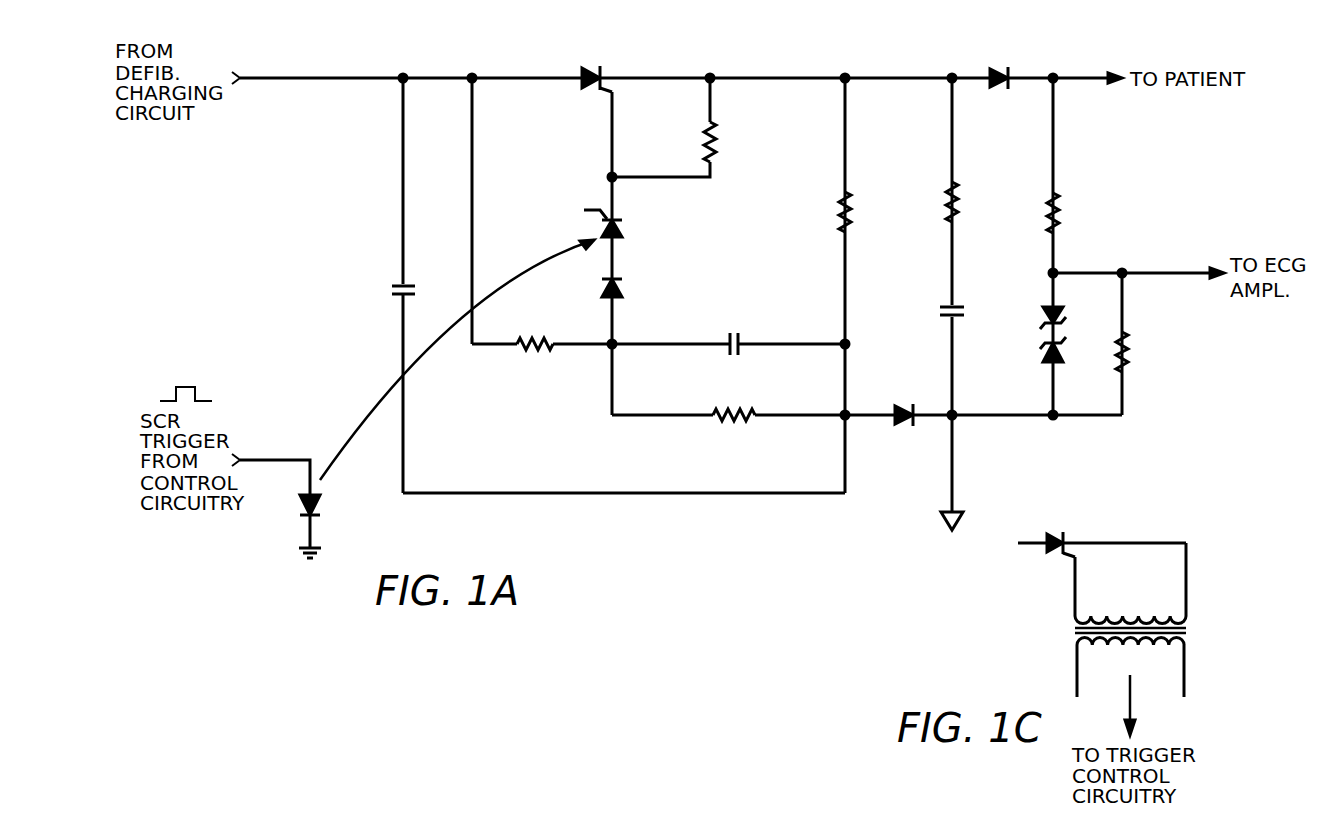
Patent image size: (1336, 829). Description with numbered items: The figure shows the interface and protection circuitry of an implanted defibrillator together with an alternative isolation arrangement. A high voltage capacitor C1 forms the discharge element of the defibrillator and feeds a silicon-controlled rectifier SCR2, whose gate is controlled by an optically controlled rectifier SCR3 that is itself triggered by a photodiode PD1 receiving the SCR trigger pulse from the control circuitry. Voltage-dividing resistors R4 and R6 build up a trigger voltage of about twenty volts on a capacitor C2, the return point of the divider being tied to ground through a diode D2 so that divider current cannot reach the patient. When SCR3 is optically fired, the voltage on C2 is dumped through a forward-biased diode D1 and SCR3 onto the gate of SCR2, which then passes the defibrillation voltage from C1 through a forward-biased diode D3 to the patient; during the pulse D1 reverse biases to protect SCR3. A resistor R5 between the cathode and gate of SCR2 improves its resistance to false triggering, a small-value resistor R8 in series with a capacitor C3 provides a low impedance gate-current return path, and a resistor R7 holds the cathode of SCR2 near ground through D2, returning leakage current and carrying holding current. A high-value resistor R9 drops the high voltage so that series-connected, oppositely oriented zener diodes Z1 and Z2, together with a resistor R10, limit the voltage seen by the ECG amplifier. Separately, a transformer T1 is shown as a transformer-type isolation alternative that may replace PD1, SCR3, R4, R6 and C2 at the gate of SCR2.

In FIG. 1A, the silicon-controlled rectifier SCR2 is at (586, 67).
In FIG. 1C, the silicon-controlled rectifier SCR2 is at (1102, 532).
In FIG. 1A, the optically controlled rectifier SCR3 is at (633, 227).
In FIG. 1A, the resistor R4 is at (542, 360).
In FIG. 1A, the resistor R5 is at (680, 127).
In FIG. 1A, the resistor R6 is at (753, 431).
In FIG. 1A, the resistor R7 is at (861, 212).
In FIG. 1A, the resistor R8 is at (969, 202).
In FIG. 1A, the resistor R9 is at (1071, 213).
In FIG. 1A, the resistor R10 is at (1112, 344).
In FIG. 1A, the high voltage capacitor C1 is at (420, 293).
In FIG. 1A, the capacitor C2 is at (728, 355).
In FIG. 1A, the capacitor C3 is at (968, 313).
In FIG. 1A, the diode D1 is at (631, 288).
In FIG. 1A, the diode D2 is at (1004, 430).
In FIG. 1A, the diode D3 is at (997, 65).
In FIG. 1A, the zener diode Z1 is at (1070, 315).
In FIG. 1A, the zener diode Z2 is at (1035, 353).
In FIG. 1A, the photodiode PD1 is at (303, 509).
In FIG. 1C, the transformer T1 is at (1148, 620).